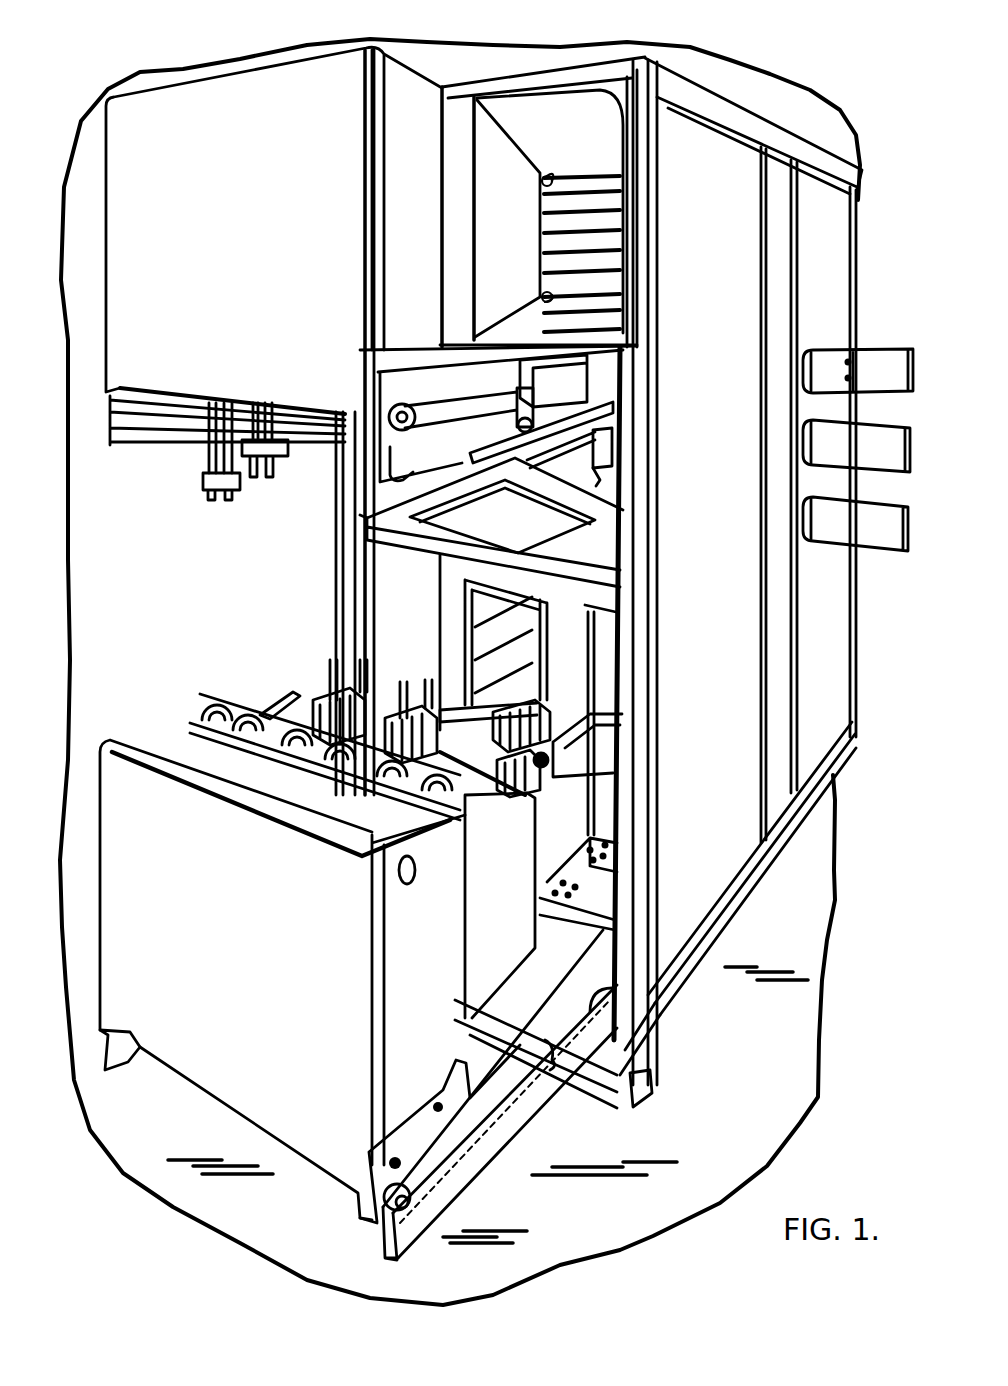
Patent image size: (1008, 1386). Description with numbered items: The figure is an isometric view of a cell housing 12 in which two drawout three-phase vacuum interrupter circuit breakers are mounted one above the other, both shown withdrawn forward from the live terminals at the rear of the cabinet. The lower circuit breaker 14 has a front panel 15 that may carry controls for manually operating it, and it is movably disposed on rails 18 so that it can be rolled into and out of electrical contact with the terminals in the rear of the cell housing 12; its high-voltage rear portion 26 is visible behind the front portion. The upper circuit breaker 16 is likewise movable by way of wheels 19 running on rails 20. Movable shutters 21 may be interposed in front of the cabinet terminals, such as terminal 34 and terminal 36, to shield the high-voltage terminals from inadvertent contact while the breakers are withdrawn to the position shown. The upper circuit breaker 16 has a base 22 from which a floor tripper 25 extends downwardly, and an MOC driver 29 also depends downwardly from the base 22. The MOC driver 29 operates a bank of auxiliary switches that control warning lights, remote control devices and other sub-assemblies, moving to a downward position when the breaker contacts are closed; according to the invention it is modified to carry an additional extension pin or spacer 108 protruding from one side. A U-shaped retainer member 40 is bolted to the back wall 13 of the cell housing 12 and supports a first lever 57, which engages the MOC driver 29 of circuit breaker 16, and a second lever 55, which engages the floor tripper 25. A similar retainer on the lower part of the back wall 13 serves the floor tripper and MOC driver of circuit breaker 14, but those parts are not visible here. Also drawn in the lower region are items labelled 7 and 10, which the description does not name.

The roller 7 is at (555, 1080).
The rail assembly 10 is at (510, 1205).
The cell housing 12 is at (826, 255).
The back wall 13 is at (603, 380).
The lower circuit breaker 14 is at (268, 943).
The front panel 15 is at (233, 1082).
The upper circuit breaker 16 is at (262, 234).
The rails 18 is at (128, 1050).
The wheels 19 is at (520, 404).
The rails 20 is at (207, 427).
The movable shutters 21 is at (588, 212).
The base 22 is at (872, 350).
The floor tripper 25 is at (223, 506).
The rear portion 26 is at (500, 873).
The MOC driver 29 is at (279, 418).
The terminal 34 is at (549, 177).
The terminal 36 is at (545, 300).
The U-shaped retainer member 40 is at (613, 443).
The second lever 55 is at (493, 450).
The first lever 57 is at (596, 470).
The extension pin 108 is at (280, 442).